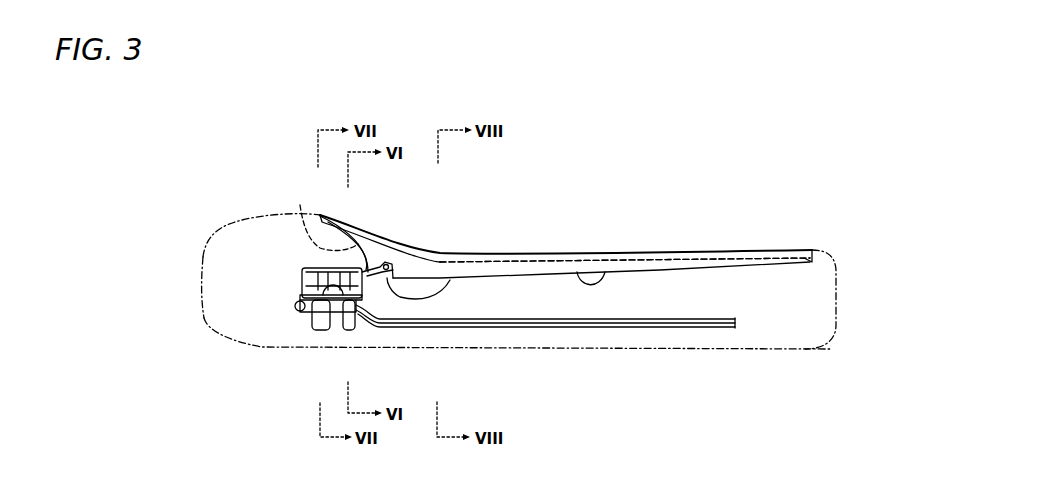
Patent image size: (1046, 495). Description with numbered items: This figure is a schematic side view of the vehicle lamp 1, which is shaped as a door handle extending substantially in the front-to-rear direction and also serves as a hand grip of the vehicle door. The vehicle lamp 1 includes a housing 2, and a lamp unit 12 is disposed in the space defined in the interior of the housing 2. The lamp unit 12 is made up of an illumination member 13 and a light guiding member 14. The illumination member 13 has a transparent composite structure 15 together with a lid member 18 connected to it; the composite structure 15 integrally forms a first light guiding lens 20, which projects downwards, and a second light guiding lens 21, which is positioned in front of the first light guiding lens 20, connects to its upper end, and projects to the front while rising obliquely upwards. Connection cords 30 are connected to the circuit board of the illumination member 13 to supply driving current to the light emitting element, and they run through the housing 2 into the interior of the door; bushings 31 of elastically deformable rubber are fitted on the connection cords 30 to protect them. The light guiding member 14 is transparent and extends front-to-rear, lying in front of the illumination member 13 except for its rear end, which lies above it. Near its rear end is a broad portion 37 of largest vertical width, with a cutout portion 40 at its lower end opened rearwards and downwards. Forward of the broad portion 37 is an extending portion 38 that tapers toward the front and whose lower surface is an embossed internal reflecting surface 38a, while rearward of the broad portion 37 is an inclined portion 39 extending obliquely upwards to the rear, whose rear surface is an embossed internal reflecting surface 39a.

The vehicle lamp 1 is at (130, 185).
The housing 2 is at (208, 231).
The lamp unit 12 is at (283, 116).
The illumination member 13 is at (302, 270).
The light guiding member 14 is at (320, 216).
The composite structure 15 is at (300, 318).
The lid member 18 is at (300, 280).
The first light guiding lens 20 is at (350, 333).
The second light guiding lens 21 is at (410, 268).
The connection cord 30 is at (737, 320).
The bushing 31 is at (322, 330).
The broad portion 37 is at (393, 262).
The extending portion 38 is at (575, 265).
The internal reflecting surface 38a is at (605, 272).
The inclined portion 39 is at (350, 214).
The internal reflecting surface 39a is at (300, 214).
The cutout portion 40 is at (450, 280).